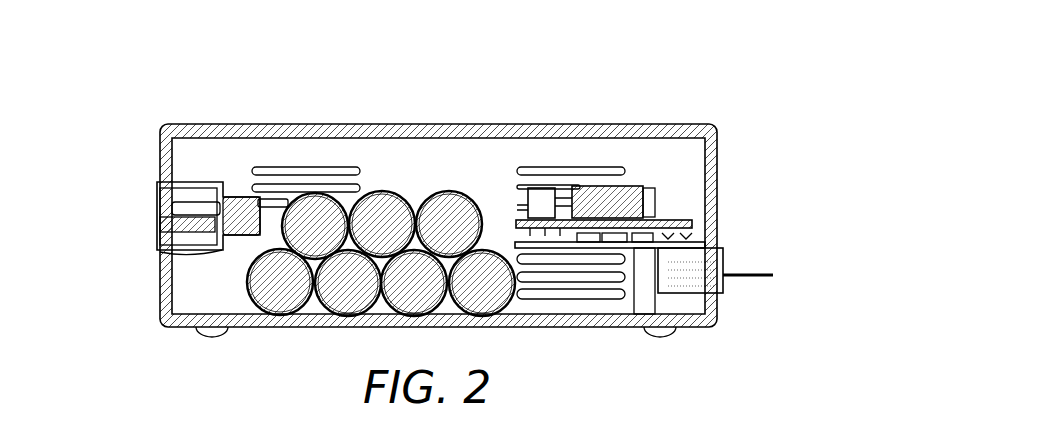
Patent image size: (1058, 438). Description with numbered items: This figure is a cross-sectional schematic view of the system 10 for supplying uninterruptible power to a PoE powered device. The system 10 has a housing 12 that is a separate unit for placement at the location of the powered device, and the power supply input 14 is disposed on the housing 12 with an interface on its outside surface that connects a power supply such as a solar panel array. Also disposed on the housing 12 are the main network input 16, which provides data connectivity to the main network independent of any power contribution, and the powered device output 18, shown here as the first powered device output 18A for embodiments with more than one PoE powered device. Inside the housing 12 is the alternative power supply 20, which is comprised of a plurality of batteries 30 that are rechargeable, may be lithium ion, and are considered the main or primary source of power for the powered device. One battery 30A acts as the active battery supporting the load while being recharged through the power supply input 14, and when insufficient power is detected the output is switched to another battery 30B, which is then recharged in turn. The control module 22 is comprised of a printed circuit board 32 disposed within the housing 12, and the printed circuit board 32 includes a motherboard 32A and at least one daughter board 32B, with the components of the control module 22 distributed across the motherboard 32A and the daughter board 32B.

The system for supplying uninterruptible power 10 is at (146, 118).
The housing 12 is at (692, 327).
The power supply input 14 is at (157, 243).
The main network input 16 is at (738, 273).
The powered device output 18 is at (722, 293).
The first powered device output 18A is at (723, 248).
The alternative power supply 20 is at (450, 190).
The control module 22 is at (692, 222).
The batteries 30 is at (378, 187).
The battery 30A is at (273, 305).
The another battery 30B is at (337, 300).
The printed circuit board 32 is at (655, 218).
The motherboard 32A is at (558, 250).
The daughter board 32B is at (630, 226).